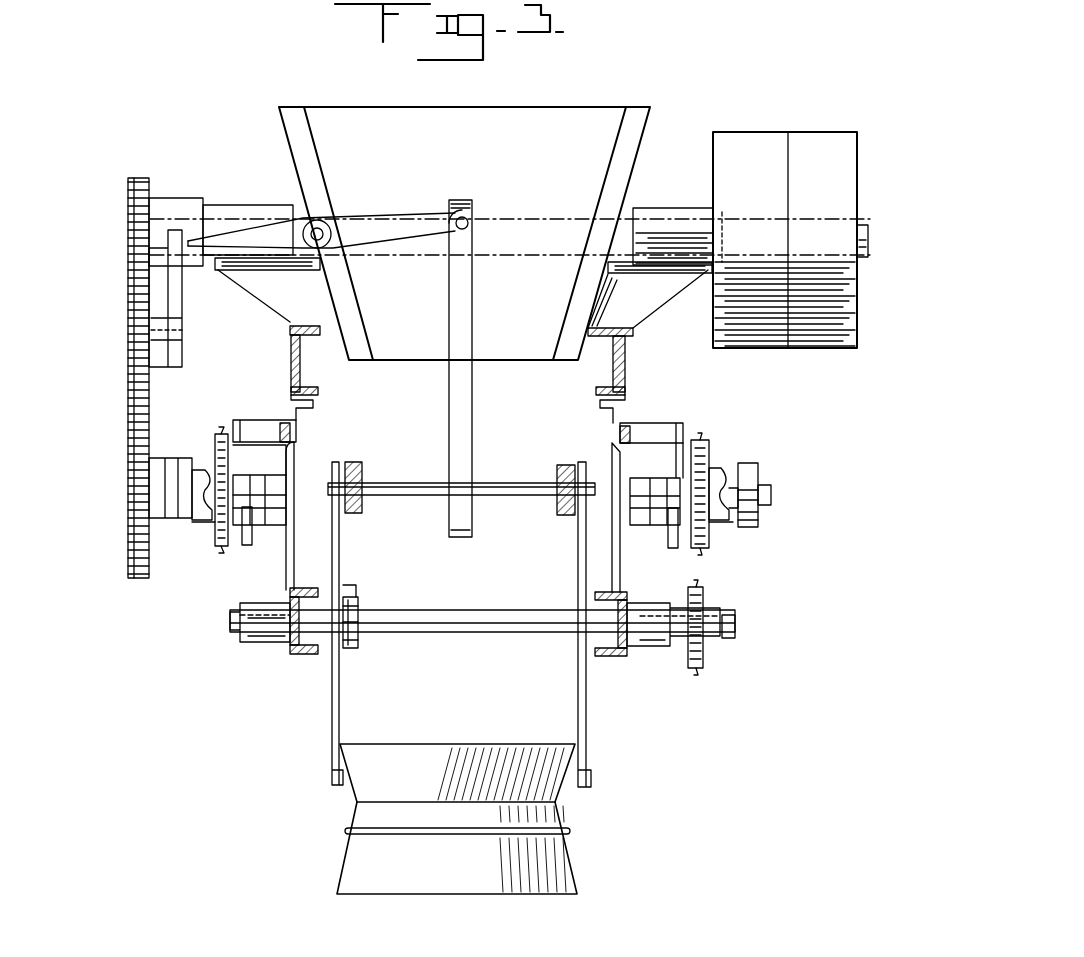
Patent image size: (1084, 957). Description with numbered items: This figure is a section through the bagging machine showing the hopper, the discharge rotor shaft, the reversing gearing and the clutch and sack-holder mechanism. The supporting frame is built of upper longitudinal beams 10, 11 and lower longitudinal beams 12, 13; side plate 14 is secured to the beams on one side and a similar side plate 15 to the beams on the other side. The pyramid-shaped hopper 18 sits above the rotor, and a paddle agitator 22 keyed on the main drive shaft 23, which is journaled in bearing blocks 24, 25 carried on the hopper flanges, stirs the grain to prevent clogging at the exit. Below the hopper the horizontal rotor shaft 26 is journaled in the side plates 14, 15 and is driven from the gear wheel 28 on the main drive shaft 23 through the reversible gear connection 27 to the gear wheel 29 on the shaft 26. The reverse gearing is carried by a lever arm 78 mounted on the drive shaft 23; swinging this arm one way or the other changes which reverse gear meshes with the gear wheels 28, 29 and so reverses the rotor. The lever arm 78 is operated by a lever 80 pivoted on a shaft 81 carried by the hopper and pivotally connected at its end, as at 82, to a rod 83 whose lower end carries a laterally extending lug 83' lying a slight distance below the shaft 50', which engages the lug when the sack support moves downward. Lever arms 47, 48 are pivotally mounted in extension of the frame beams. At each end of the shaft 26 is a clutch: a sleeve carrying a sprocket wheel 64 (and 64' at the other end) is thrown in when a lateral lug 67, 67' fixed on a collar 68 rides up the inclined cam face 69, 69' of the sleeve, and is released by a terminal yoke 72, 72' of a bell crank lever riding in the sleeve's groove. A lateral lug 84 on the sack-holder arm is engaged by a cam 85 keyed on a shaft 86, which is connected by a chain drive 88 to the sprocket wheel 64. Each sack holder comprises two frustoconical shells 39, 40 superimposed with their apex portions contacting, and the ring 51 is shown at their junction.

The hopper 18 is at (578, 130).
The gear wheel 28 is at (151, 191).
The bearing block 25 is at (242, 213).
The shaft 81 is at (326, 226).
The lever 80 is at (372, 231).
The pivotal connection 82 is at (470, 222).
The bearing block 24 is at (668, 232).
The main drive shaft 23 is at (862, 228).
The lever arm 78 is at (167, 242).
The reversible gear connection 27 is at (125, 324).
The upper longitudinal beam 10 is at (301, 381).
The upper longitudinal beam 11 is at (616, 362).
The paddle agitator 22 is at (800, 328).
The gear wheel 29 is at (149, 432).
The side plate 15 is at (297, 432).
The rod 83 is at (483, 368).
The laterally extending lug 83' is at (462, 549).
The side plate 14 is at (620, 432).
The sprocket wheel 64 is at (726, 485).
The sprocket wheel 64' is at (212, 508).
The inclined cam face 69 is at (769, 479).
The inclined cam face 69' is at (182, 474).
The horizontal shaft 26 is at (772, 496).
The collar 68 is at (756, 517).
The lateral lug 67 is at (744, 539).
The lateral lug 67' is at (185, 537).
The terminal yoke 72 is at (663, 549).
The terminal yoke 72' is at (256, 543).
The lever arm 47 is at (362, 506).
The shaft 50' is at (461, 510).
The lever arm 48 is at (567, 516).
The lateral lug 84 is at (349, 592).
The cam 85 is at (360, 622).
The shaft 86 is at (440, 628).
The chain drive 88 is at (705, 600).
The lower longitudinal beam 12 is at (312, 657).
The lower longitudinal beam 13 is at (632, 658).
The frustoconical shell 39 is at (362, 786).
The frustoconical shell 40 is at (362, 857).
The ring 51 is at (570, 862).